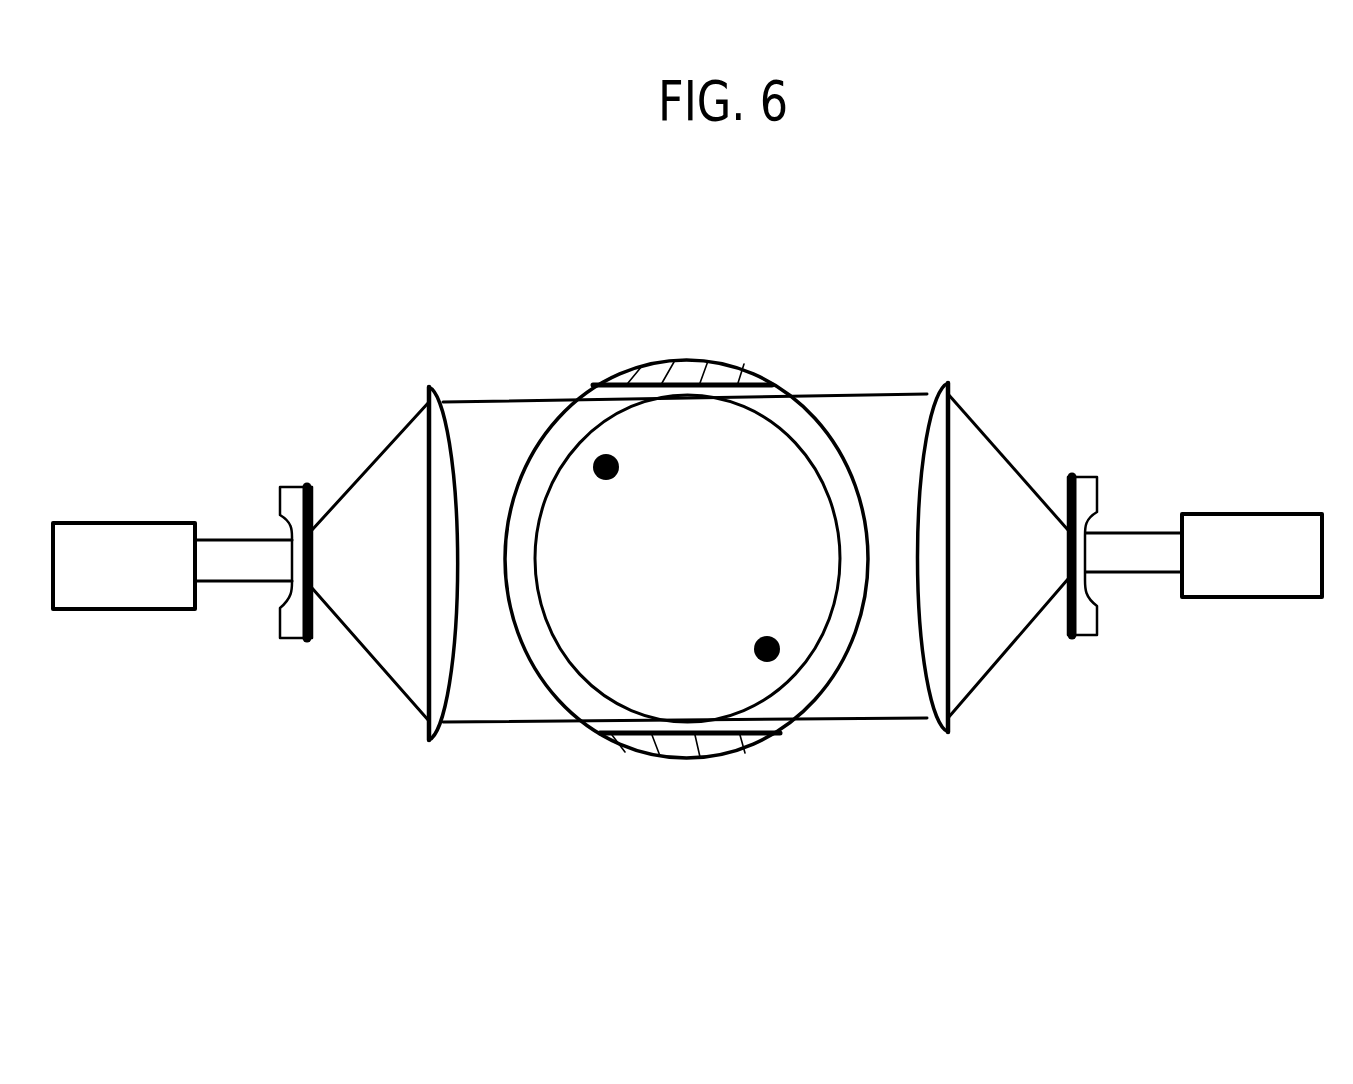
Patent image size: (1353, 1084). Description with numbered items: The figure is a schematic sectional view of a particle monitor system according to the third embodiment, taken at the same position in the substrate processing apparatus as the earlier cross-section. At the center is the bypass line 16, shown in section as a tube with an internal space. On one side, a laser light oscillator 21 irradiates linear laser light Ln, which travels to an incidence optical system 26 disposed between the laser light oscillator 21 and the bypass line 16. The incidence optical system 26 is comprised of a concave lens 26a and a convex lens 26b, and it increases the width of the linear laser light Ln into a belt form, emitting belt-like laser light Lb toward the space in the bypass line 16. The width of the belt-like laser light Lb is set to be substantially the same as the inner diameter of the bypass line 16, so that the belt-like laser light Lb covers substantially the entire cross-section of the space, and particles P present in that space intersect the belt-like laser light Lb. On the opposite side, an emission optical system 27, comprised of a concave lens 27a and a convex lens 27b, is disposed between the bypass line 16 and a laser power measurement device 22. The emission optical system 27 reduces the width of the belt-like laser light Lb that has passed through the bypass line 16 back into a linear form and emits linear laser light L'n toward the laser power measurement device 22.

The bypass line 16 is at (727, 757).
The laser light oscillator 21 is at (1240, 514).
The laser power measurement device 22 is at (128, 521).
The incidence optical system 26 is at (1007, 639).
The concave lens 26a is at (1080, 637).
The convex lens 26b is at (942, 736).
The emission optical system 27 is at (369, 642).
The concave lens 27a is at (293, 640).
The convex lens 27b is at (432, 742).
The particles P is at (606, 454).
The belt-like laser light Lb is at (857, 720).
The linear laser light Ln is at (1140, 575).
The linear laser light L'n is at (232, 646).